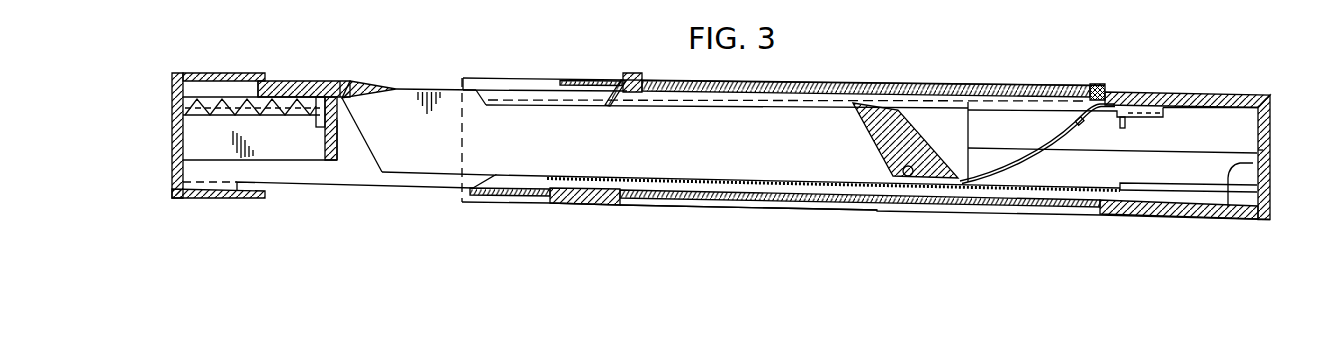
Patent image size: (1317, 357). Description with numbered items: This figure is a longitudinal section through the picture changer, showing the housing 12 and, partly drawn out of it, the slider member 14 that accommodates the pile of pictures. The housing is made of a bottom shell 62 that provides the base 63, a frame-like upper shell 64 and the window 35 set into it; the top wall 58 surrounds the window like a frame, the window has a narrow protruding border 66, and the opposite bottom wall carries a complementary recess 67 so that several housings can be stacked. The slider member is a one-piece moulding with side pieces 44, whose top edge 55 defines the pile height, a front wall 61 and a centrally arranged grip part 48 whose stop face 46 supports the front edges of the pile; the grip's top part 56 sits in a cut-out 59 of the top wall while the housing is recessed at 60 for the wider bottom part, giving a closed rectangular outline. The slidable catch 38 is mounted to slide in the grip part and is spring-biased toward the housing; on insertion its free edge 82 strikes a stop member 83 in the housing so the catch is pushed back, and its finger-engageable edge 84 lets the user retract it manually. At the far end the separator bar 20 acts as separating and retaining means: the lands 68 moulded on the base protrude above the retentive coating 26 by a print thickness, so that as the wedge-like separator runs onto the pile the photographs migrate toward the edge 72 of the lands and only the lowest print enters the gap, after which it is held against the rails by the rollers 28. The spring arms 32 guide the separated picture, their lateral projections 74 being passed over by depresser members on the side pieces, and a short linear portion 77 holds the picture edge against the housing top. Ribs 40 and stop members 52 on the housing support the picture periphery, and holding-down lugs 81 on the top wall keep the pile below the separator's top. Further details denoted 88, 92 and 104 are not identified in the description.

The housing 12 is at (1197, 95).
The slider member 14 is at (305, 186).
The separator bar 20 is at (914, 134).
The retentive coating 26 is at (722, 177).
The rollers 28 is at (892, 167).
The spring arms 32 is at (1018, 190).
The window 35 is at (874, 83).
The slidable catch 38 is at (296, 80).
The ribs 40 is at (1130, 100).
The side pieces 44 is at (424, 90).
The stop face 46 is at (340, 144).
The grip part 48 is at (194, 73).
The stop members 52 is at (1122, 128).
The top edge 55 is at (463, 86).
The top part 56 is at (247, 73).
The top wall 58 is at (1234, 93).
The cut-out 59 is at (540, 79).
The recess 60 is at (522, 204).
The front wall 61 is at (178, 141).
The bottom shell 62 is at (1192, 214).
The base 63 is at (740, 213).
The upper shell 64 is at (1147, 94).
The border 66 is at (634, 73).
The recess 67 is at (876, 211).
The lands 68 is at (1184, 183).
The edge 72 is at (1126, 180).
The projections 74 is at (1078, 125).
The linear portion 77 is at (1094, 86).
The holding-down lugs 81 is at (541, 106).
The free edge 82 is at (390, 87).
The stop member 83 is at (612, 95).
The finger-engageable edge 84 is at (351, 81).
The end wall 88 is at (1272, 122).
The inclined wall 92 is at (362, 136).
The stop 104 is at (1230, 182).